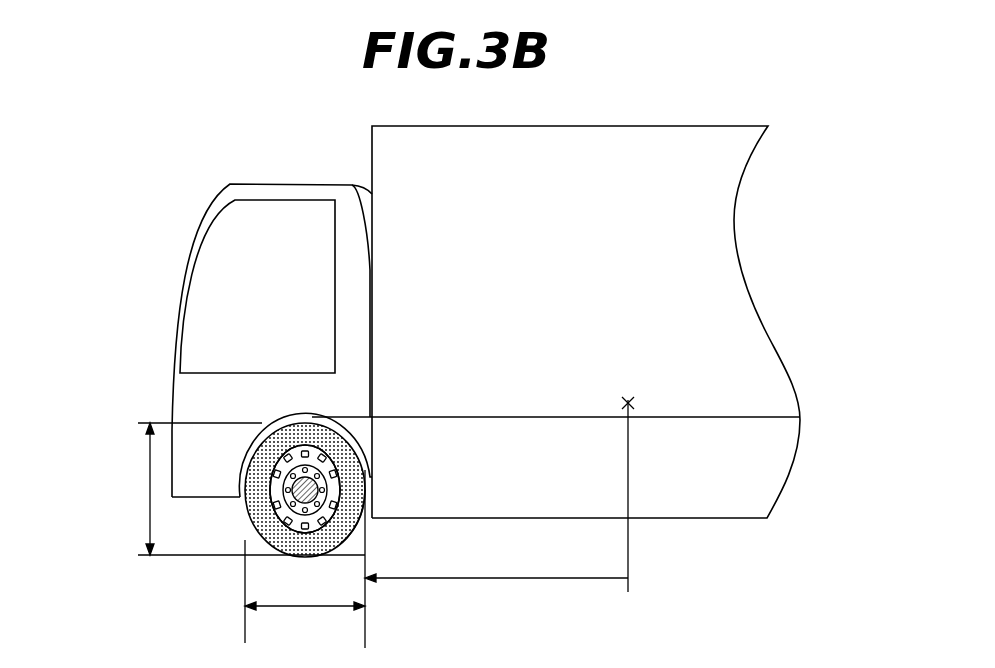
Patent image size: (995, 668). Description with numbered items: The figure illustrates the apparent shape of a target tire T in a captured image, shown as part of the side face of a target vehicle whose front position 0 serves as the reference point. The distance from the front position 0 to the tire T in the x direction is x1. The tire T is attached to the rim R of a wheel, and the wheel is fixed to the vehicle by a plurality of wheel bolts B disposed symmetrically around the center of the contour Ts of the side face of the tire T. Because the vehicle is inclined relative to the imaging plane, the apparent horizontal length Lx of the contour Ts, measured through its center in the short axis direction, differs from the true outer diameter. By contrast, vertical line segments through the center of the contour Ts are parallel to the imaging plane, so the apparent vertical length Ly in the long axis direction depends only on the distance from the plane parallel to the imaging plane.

The contour of the side face of the tire Ts is at (350, 447).
The tire T is at (295, 438).
The rim R is at (276, 459).
The wheel bolts B is at (288, 483).
The apparent length in the vertical direction Ly is at (242, 489).
The apparent length in the horizontal direction Lx is at (305, 559).
The distance from the front position to the tire x1 is at (496, 564).
The front position 0 is at (639, 485).